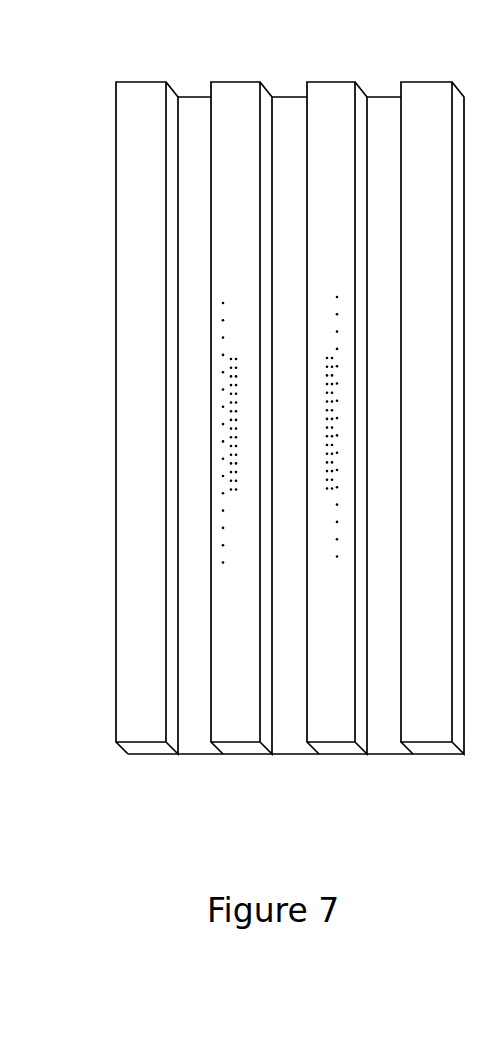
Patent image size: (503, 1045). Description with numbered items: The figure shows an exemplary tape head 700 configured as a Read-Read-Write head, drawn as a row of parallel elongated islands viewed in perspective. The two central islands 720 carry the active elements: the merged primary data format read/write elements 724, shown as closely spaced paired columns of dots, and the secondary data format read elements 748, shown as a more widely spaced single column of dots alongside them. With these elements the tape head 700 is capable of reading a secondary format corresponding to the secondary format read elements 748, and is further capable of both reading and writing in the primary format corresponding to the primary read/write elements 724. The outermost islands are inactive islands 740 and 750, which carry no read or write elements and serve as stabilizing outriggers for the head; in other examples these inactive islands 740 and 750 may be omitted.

The tape head 700 is at (274, 60).
The printhead die 720 is at (248, 728).
The primary data format read/write elements 724 is at (228, 438).
The inactive island 740 is at (415, 728).
The secondary data format read elements 748 is at (211, 529).
The inactive island 750 is at (155, 728).